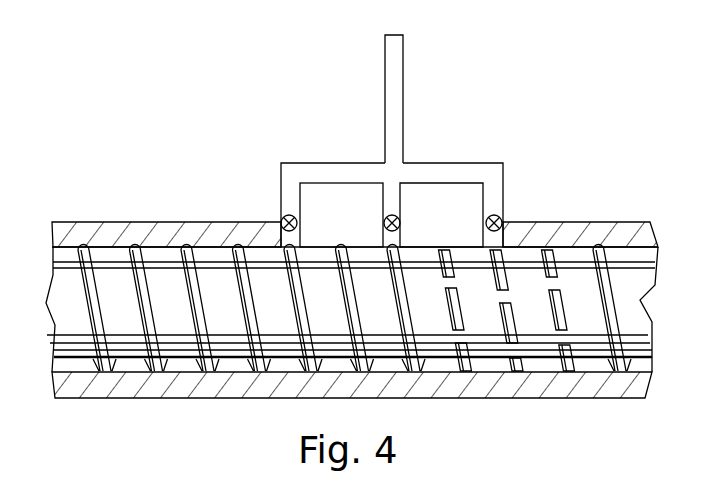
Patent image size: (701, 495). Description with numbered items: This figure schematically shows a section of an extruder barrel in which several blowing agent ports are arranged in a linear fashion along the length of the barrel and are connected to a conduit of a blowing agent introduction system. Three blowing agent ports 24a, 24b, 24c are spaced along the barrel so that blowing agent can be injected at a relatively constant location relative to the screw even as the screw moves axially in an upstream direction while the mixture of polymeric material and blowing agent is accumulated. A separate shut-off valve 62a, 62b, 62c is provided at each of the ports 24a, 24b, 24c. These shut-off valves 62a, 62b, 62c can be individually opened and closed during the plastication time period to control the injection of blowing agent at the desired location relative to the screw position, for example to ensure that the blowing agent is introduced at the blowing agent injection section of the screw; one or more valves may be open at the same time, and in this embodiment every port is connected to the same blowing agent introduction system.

The blowing agent port 24a is at (302, 242).
The blowing agent port 24b is at (398, 238).
The blowing agent port 24c is at (487, 243).
The shut-off valve 62a is at (284, 217).
The shut-off valve 62b is at (387, 217).
The shut-off valve 62c is at (499, 217).